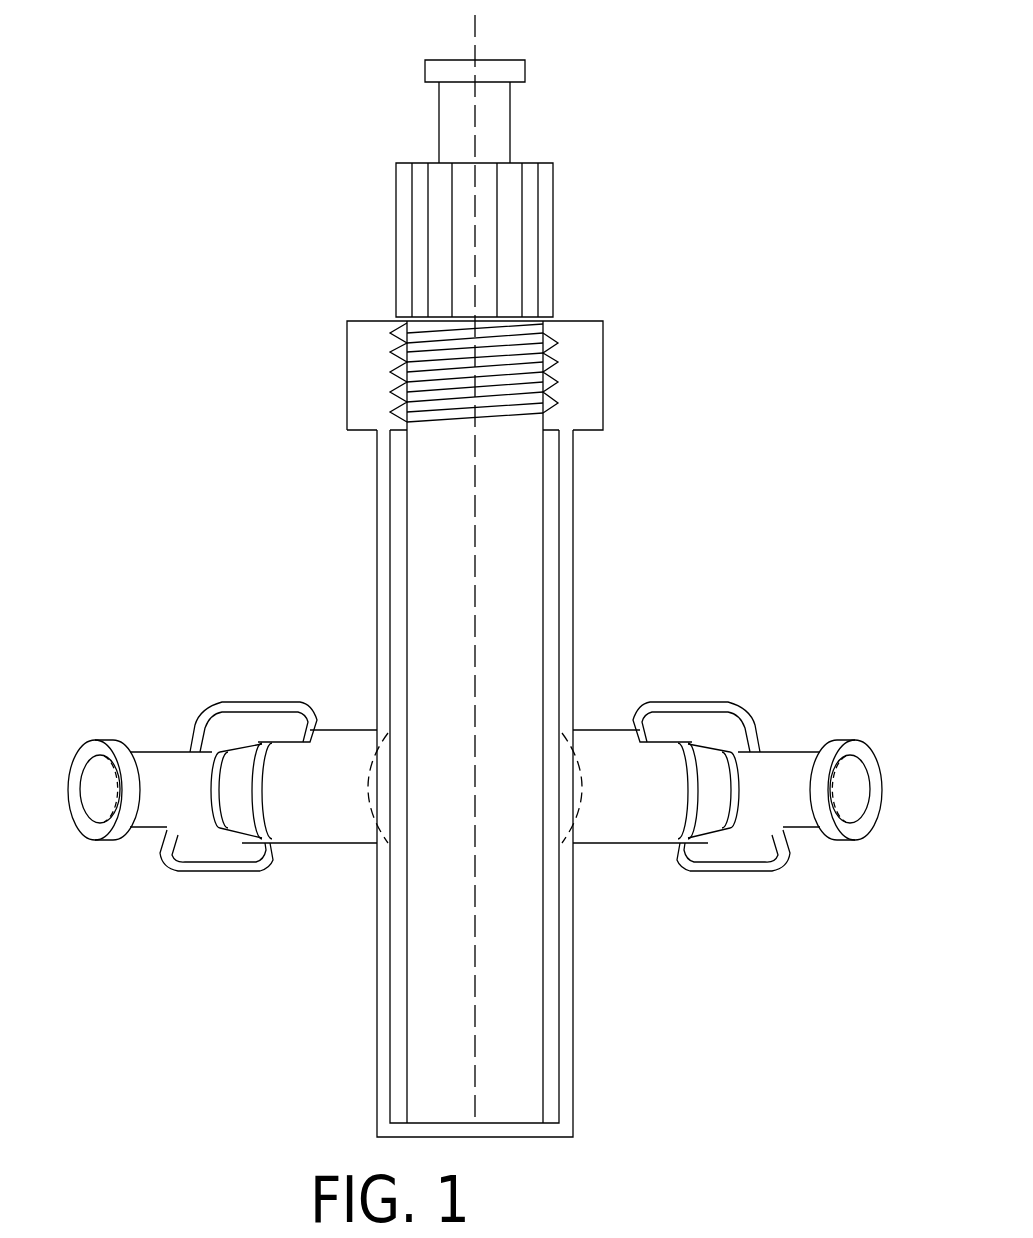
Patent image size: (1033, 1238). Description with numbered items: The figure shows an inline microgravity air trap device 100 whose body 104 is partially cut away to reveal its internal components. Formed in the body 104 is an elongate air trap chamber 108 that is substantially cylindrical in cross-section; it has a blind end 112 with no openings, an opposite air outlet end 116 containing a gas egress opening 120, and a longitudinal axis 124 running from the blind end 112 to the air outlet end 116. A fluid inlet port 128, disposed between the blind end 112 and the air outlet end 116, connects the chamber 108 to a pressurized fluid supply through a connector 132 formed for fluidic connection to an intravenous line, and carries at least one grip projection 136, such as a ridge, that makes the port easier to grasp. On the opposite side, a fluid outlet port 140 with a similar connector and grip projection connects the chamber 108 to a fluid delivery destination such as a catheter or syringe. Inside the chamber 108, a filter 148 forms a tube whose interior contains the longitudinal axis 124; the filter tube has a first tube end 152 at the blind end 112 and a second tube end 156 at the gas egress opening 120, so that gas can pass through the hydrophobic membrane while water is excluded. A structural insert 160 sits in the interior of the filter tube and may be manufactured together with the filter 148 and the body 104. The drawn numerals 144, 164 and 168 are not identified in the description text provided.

The microgravity air trap device 100 is at (252, 142).
The body 104 is at (375, 553).
The elongate air trap chamber 108 is at (553, 492).
The blind end 112 is at (493, 1123).
The air outlet end 116 is at (545, 322).
The gas egress opening 120 is at (407, 321).
The longitudinal axis 124 is at (478, 40).
The fluid inlet port 128 is at (853, 803).
The connector 132 is at (832, 745).
The grip projection 136 is at (718, 723).
The fluid outlet port 140 is at (92, 790).
The first port lock nut 144 is at (282, 722).
The filter 148 is at (518, 602).
The first tube end 152 is at (450, 1122).
The second tube end 156 is at (527, 432).
The structural insert 160 is at (522, 415).
The plunger lower end 164 is at (515, 1123).
The collar thread 168 is at (435, 358).